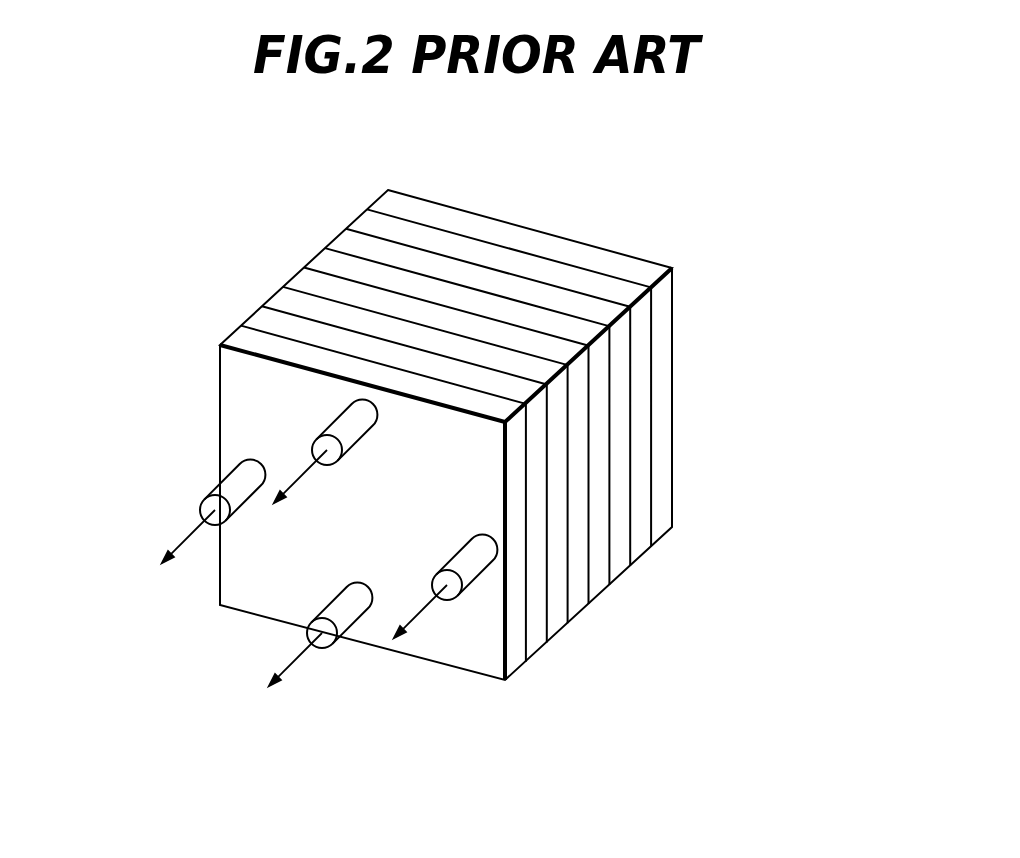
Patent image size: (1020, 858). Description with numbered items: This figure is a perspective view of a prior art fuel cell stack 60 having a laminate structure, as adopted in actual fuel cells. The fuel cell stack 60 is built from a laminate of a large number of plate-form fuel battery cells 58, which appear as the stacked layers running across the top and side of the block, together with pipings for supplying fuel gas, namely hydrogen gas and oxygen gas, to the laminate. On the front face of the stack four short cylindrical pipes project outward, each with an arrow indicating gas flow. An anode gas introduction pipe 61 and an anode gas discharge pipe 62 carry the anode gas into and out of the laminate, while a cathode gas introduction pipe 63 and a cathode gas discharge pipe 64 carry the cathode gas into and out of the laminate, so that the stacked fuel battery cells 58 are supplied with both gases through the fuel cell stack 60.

The fuel battery cells 58 is at (345, 245).
The fuel cell stack 60 is at (690, 368).
The anode gas introduction pipe 61 is at (340, 427).
The anode gas discharge pipe 62 is at (350, 617).
The cathode gas introduction pipe 63 is at (245, 503).
The cathode gas discharge pipe 64 is at (477, 567).